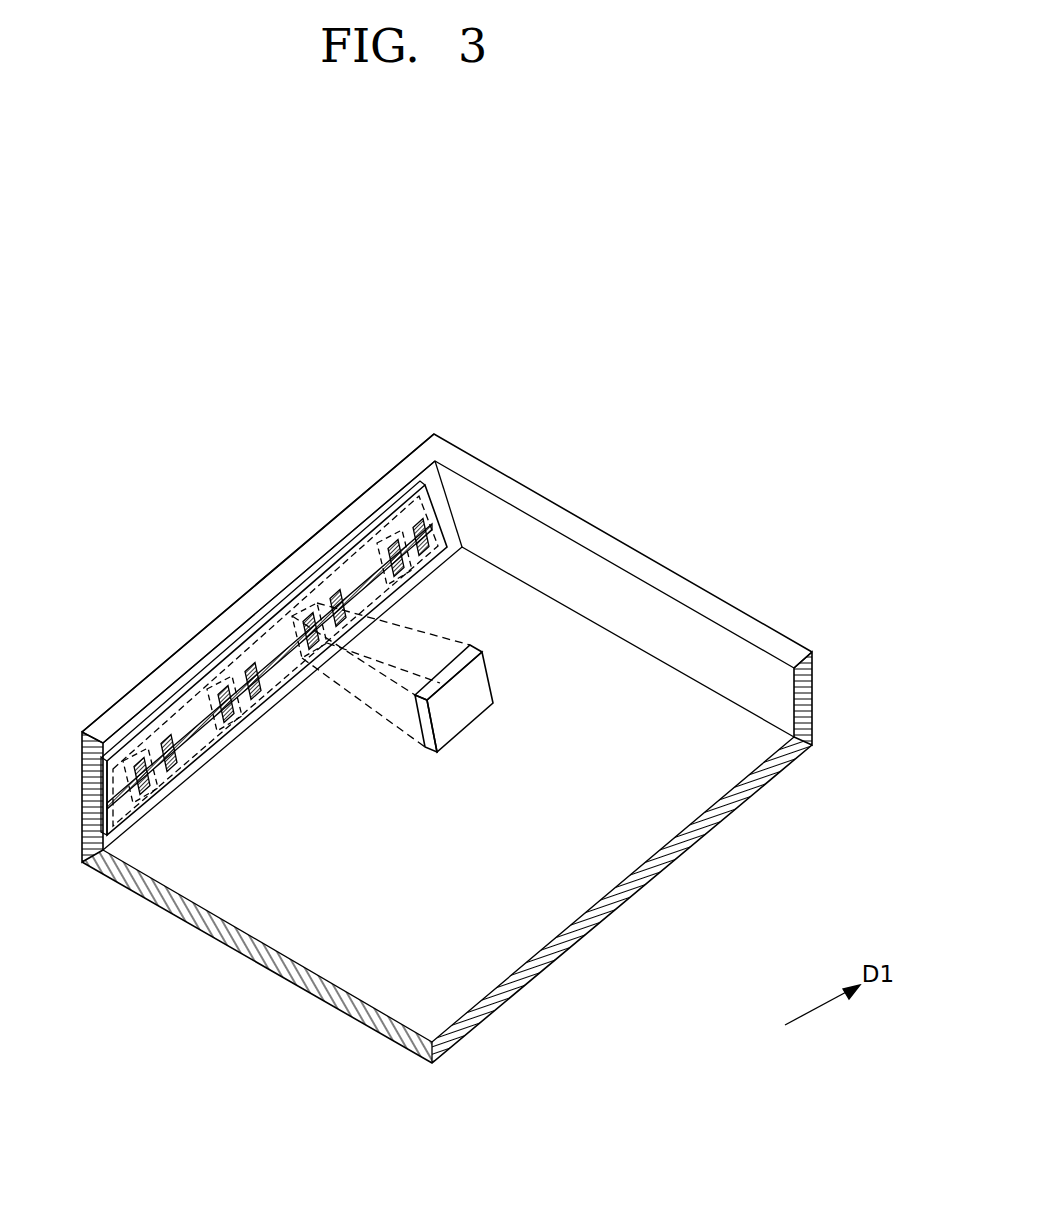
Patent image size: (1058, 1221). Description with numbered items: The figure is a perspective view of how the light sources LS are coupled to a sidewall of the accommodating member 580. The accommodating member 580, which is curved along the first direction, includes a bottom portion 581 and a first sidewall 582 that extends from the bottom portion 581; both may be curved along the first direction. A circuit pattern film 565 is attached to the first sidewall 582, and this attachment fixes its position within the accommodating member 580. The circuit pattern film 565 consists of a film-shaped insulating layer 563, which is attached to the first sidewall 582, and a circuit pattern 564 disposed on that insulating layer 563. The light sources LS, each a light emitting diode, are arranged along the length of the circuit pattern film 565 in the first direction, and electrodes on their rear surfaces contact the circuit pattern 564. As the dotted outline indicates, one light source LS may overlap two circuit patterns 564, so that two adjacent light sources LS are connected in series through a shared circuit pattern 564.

The accommodating member 580 is at (569, 418).
The bottom portion 581 is at (642, 800).
The first sidewall 582 is at (416, 487).
The circuit pattern film 565 is at (278, 449).
The insulating layer 563 is at (277, 617).
The circuit pattern 564 is at (337, 598).
The light source LS is at (466, 708).